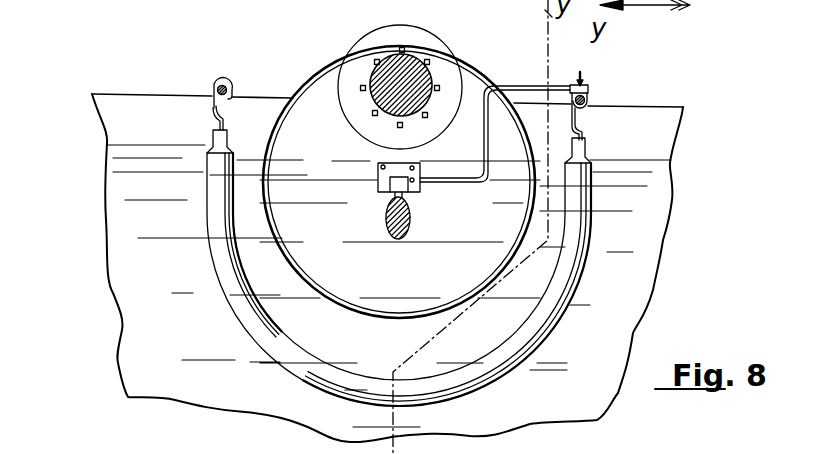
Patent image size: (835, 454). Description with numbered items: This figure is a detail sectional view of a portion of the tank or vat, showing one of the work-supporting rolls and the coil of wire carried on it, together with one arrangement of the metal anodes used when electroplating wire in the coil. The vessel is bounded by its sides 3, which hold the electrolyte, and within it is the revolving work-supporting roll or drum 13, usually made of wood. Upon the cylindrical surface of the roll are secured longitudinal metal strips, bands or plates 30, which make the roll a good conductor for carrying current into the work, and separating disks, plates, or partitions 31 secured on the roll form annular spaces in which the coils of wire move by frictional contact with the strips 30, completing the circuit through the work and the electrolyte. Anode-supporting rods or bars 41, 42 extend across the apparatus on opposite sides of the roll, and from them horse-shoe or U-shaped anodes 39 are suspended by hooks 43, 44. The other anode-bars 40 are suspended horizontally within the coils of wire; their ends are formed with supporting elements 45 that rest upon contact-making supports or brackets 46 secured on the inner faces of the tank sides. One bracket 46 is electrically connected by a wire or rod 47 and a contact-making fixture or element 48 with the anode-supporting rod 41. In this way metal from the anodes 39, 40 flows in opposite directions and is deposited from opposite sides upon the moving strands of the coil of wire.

The sides 3 is at (118, 182).
The revolving work-supporting roll or drum 13 is at (418, 78).
The metal strips, bands or plates 30 is at (375, 115).
The separating disks, plates, or partitions 31 is at (422, 35).
The horse-shoe or U-shaped anodes 39 is at (568, 280).
The anode-bars 40 is at (386, 220).
The anode-supporting rod or bar 41 is at (588, 98).
The anode-supporting rod or bar 42 is at (217, 85).
The hook 43 is at (585, 117).
The hook 44 is at (212, 112).
The supporting elements 45 is at (407, 195).
The contact-making supports or brackets 46 is at (378, 185).
The wire or rod 47 is at (450, 178).
The contact-making fixture or element 48 is at (585, 88).